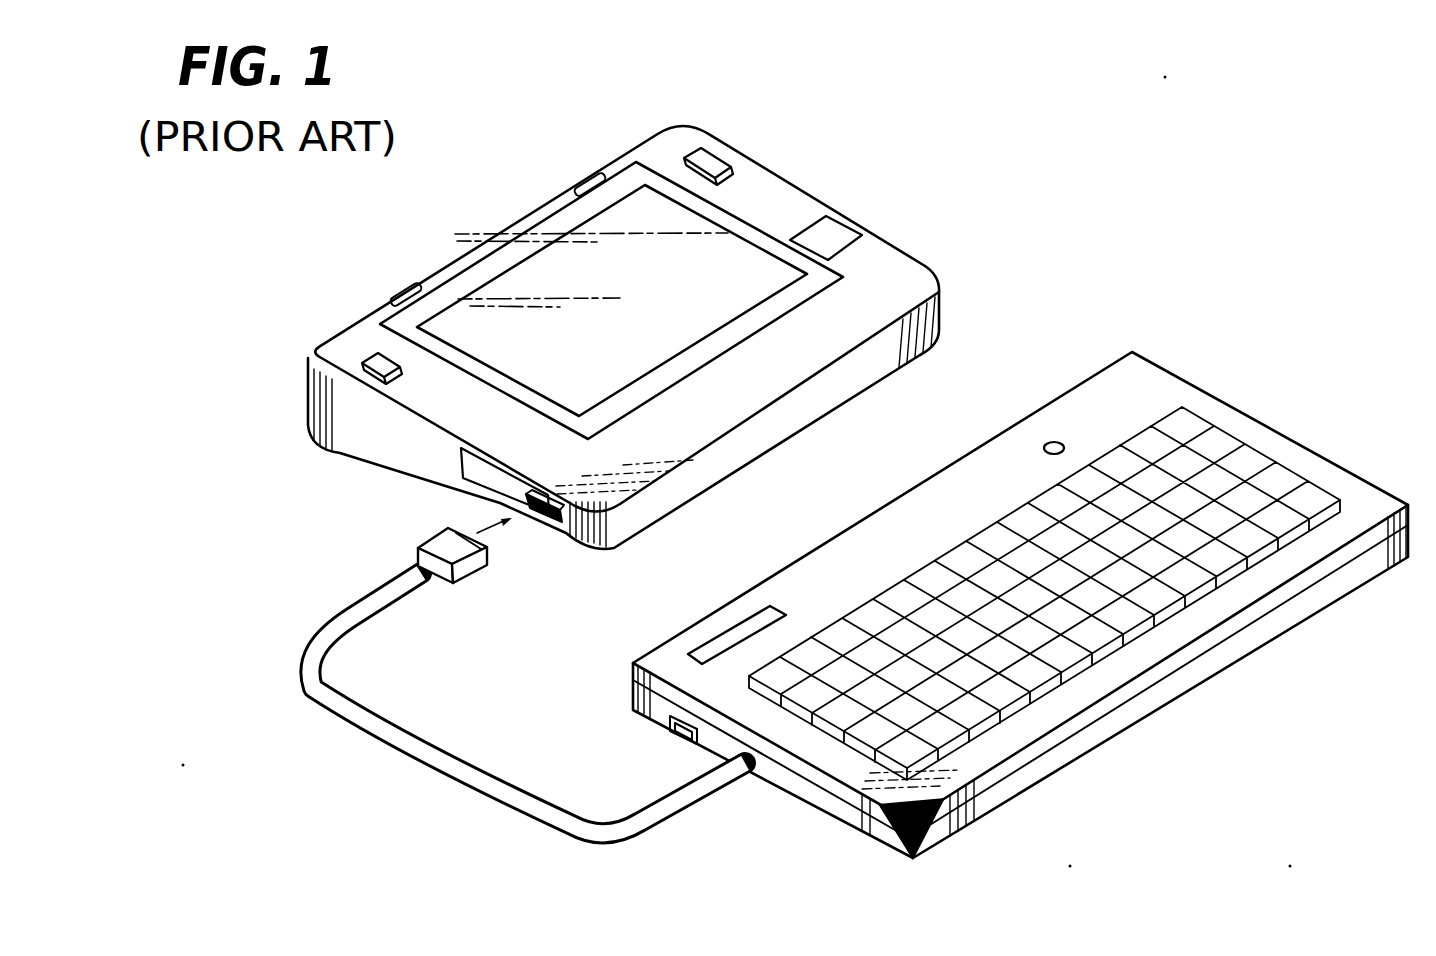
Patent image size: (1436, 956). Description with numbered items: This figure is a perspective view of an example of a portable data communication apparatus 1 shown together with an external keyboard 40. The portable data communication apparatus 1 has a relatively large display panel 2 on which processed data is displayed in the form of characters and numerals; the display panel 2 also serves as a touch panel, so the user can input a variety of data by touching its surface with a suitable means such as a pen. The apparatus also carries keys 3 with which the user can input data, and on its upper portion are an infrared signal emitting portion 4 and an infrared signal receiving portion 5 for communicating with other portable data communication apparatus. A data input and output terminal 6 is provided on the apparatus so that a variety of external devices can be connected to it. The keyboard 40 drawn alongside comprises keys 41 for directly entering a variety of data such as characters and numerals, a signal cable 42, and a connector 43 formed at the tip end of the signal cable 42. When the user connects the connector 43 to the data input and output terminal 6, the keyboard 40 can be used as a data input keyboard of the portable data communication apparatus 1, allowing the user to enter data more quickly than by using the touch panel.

The portable data communication apparatus 1 is at (903, 250).
The display panel 2 is at (732, 228).
The keys 3 is at (713, 162).
The infrared signal emitting portion 4 is at (592, 176).
The infrared signal receiving portion 5 is at (401, 290).
The data input and output terminal 6 is at (557, 514).
The keyboard 40 is at (1257, 373).
The keys 41 is at (1148, 606).
The signal cable 42 is at (443, 770).
The connector 43 is at (460, 556).